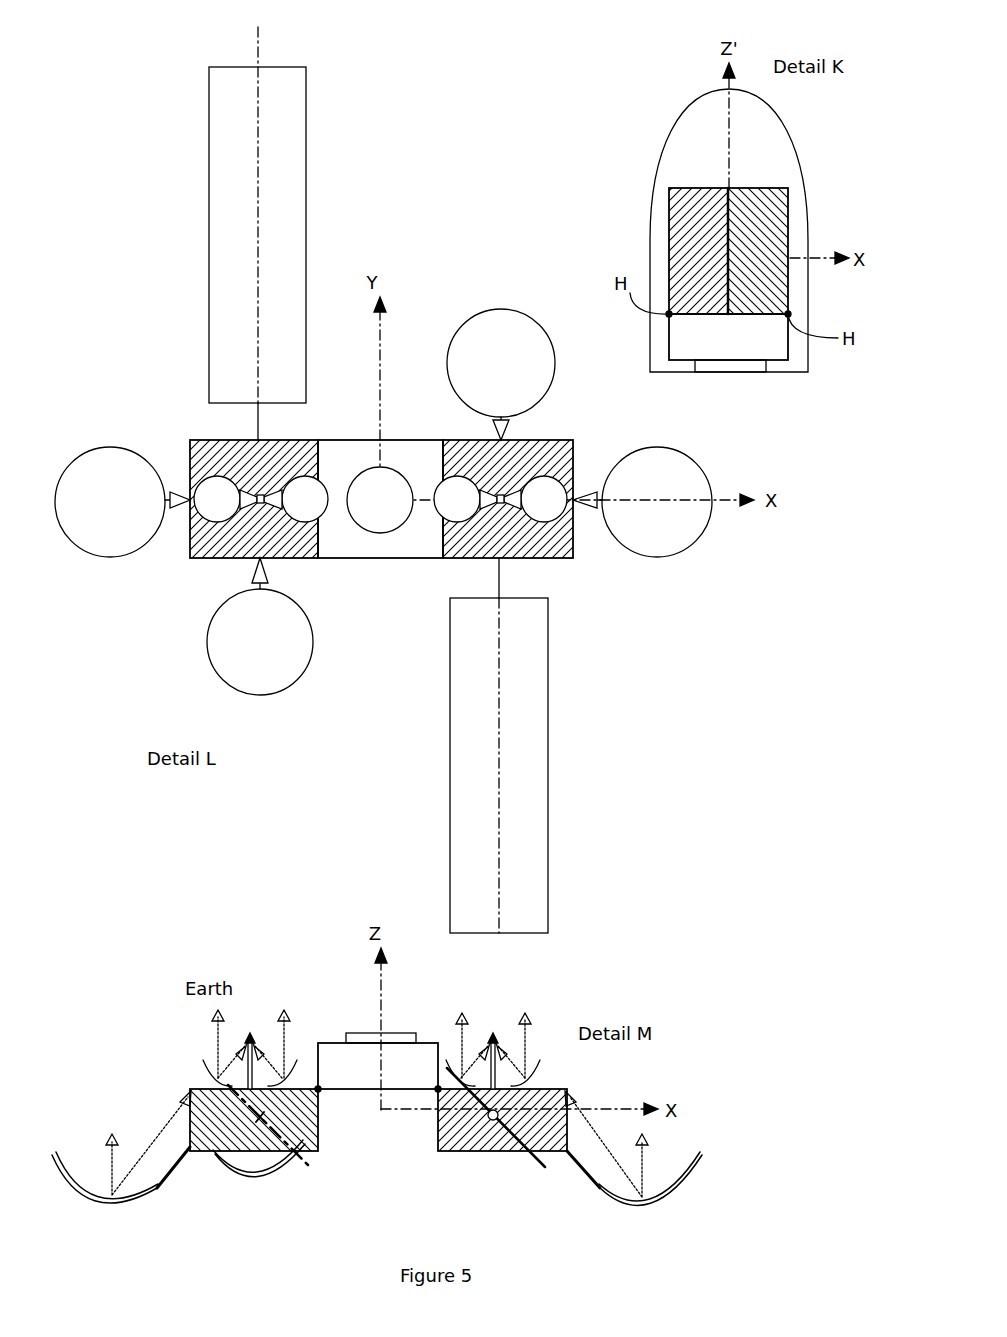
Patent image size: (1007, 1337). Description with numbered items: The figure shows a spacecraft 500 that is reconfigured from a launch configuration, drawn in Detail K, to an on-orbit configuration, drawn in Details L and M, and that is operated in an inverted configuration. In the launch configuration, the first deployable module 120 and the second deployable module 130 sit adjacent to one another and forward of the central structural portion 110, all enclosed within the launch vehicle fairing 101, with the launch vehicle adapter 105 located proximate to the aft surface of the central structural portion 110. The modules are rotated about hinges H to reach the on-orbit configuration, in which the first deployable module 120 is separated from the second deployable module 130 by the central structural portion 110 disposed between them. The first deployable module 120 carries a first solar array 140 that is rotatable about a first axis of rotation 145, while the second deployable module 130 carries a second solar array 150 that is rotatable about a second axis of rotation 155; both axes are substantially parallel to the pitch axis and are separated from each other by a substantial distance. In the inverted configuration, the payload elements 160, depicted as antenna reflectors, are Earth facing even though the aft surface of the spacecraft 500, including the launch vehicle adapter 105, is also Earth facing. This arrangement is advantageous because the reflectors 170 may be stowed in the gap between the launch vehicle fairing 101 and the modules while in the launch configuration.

The spacecraft 500 is at (128, 58).
The launch vehicle fairing 101 is at (668, 148).
The launch vehicle adapter 105 is at (372, 470).
The central structural portion 110 is at (347, 562).
The first deployable module 120 is at (200, 543).
The second deployable module 130 is at (558, 560).
The first solar array 140 is at (209, 250).
The first axis of rotation 145 is at (258, 52).
The second solar array 150 is at (548, 730).
The second axis of rotation 155 is at (499, 765).
The payload elements 160 is at (207, 627).
The reflectors 170 is at (216, 497).